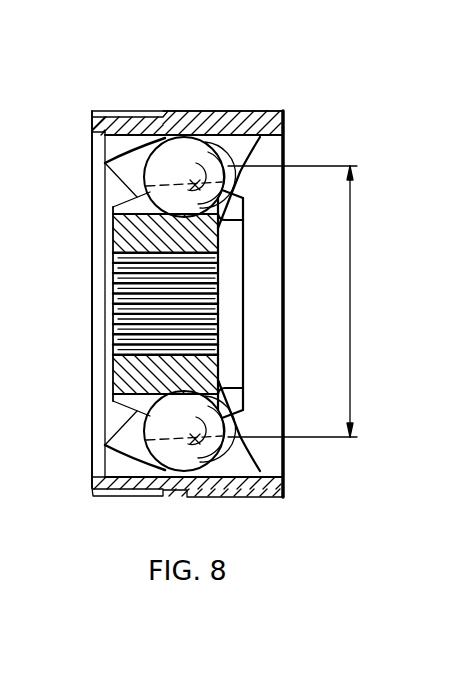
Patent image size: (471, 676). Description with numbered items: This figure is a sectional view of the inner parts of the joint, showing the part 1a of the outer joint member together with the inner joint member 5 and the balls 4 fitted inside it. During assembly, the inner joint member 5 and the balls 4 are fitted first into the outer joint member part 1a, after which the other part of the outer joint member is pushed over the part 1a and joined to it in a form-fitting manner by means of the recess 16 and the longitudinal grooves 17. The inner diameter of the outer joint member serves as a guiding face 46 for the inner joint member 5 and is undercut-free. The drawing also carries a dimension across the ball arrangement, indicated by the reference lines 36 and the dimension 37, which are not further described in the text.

The part of the outer joint member 1a is at (230, 120).
The balls 4 is at (200, 160).
The inner joint member 5 is at (277, 120).
The recess 16 is at (168, 110).
The longitudinal grooves 17 is at (113, 110).
The contact point 36 is at (263, 168).
The dimension line 37 is at (349, 288).
The guiding face 46 is at (166, 195).